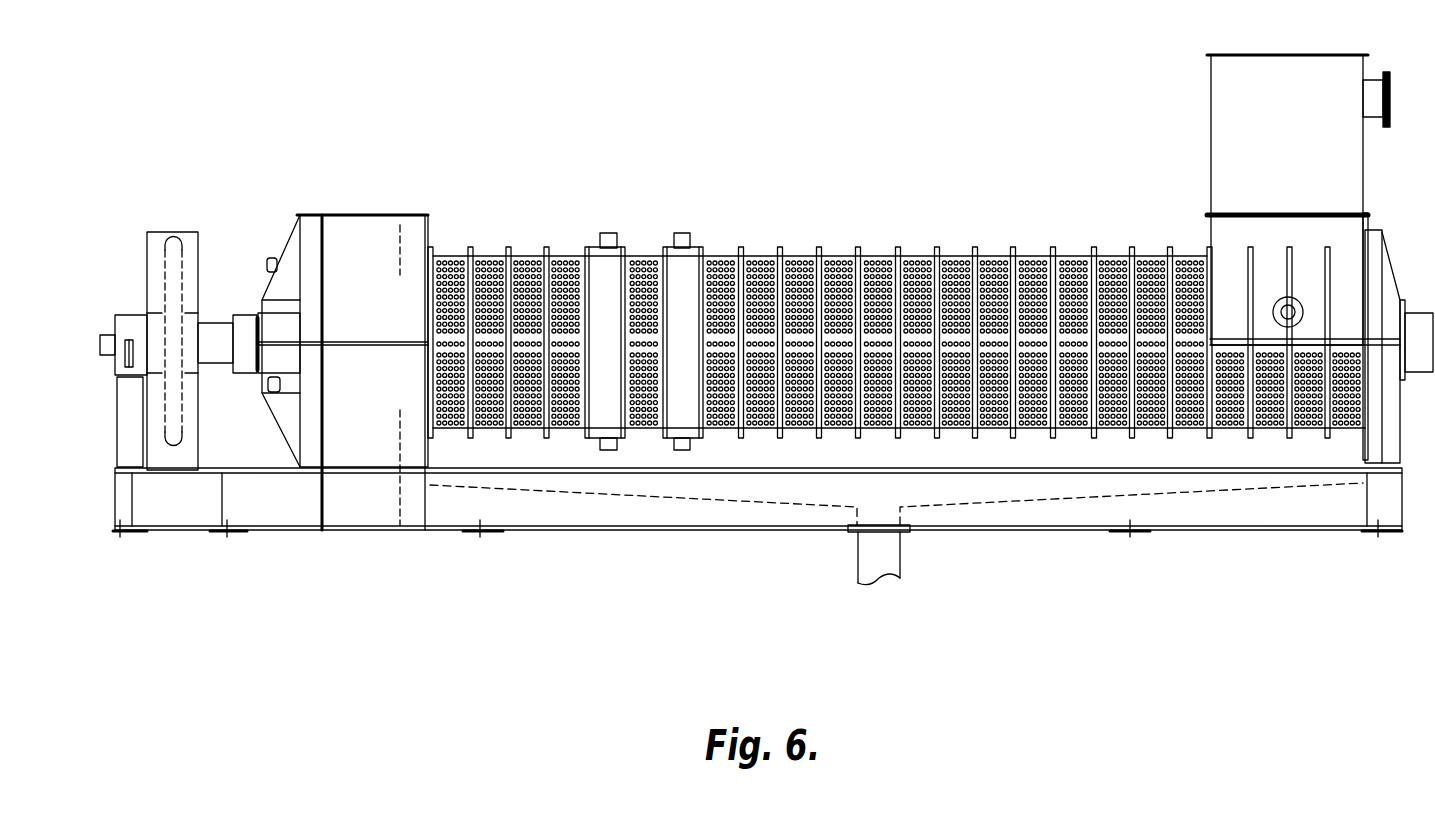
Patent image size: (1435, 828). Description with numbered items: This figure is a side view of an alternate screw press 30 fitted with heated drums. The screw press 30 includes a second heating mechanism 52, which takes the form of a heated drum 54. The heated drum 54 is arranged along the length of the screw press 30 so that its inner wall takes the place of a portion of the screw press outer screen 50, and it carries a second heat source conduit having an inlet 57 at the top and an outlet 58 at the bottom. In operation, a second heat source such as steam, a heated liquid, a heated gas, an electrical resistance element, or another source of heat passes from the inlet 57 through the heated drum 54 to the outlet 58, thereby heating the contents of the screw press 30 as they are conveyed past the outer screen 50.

The screw press 30 is at (1072, 652).
The screw press outer screen 50 is at (898, 284).
The second heating mechanism 52 is at (896, 240).
The heated drum 54 is at (562, 289).
The inlet 57 is at (654, 148).
The outlet 58 is at (662, 513).